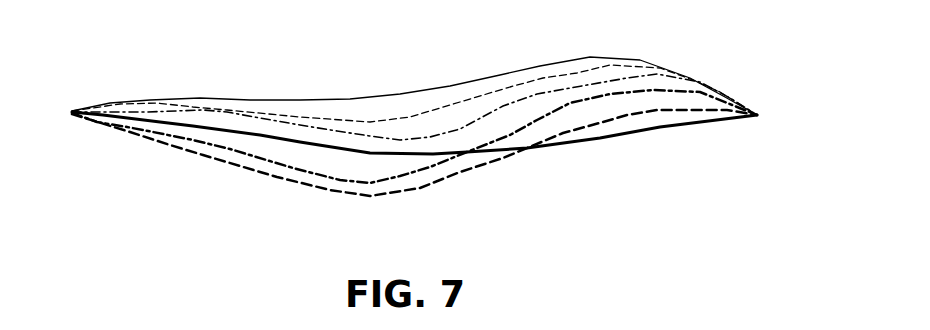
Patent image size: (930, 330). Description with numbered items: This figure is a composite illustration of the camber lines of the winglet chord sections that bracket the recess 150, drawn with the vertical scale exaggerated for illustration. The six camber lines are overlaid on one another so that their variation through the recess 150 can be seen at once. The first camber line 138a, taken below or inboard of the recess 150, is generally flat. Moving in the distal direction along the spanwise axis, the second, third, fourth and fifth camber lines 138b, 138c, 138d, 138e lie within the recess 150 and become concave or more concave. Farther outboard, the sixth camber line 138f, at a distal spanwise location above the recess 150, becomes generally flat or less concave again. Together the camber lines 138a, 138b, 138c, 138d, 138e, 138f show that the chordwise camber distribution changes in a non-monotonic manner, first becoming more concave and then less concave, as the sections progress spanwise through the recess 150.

The recess 150 is at (307, 96).
The first camber line 138a is at (597, 139).
The second camber line 138b is at (683, 113).
The third camber line 138c is at (672, 99).
The fourth camber line 138d is at (590, 82).
The fifth camber line 138e is at (537, 77).
The sixth camber line 138f is at (477, 79).